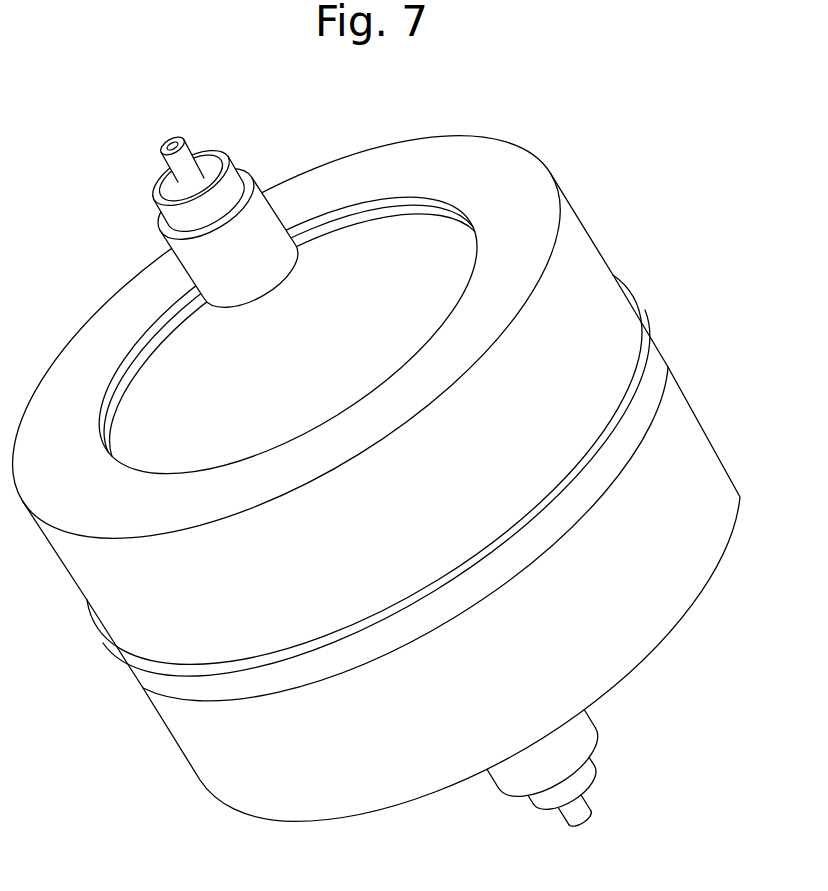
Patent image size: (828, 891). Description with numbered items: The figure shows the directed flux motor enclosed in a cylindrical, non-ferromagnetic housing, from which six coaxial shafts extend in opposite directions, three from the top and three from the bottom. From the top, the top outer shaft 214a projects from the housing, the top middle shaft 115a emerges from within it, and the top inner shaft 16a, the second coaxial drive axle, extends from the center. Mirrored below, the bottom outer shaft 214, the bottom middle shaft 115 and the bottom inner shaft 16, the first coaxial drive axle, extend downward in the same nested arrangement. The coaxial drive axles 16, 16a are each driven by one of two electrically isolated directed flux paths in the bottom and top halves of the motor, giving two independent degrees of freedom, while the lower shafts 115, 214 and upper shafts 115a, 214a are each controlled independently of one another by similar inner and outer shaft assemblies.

The coaxial drive axle 16a is at (173, 162).
The upper shaft 115a is at (180, 219).
The upper shaft 214a is at (190, 263).
The lower shaft 214 is at (590, 725).
The lower shaft 115 is at (588, 765).
The coaxial drive axle 16 is at (590, 803).